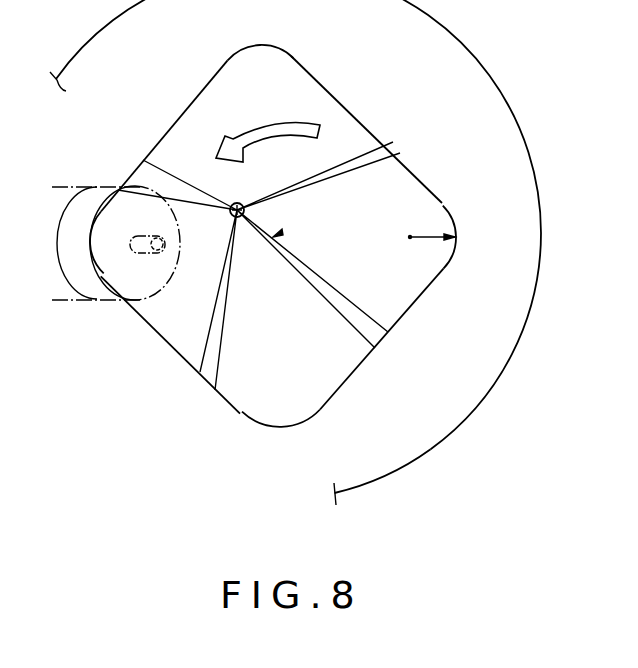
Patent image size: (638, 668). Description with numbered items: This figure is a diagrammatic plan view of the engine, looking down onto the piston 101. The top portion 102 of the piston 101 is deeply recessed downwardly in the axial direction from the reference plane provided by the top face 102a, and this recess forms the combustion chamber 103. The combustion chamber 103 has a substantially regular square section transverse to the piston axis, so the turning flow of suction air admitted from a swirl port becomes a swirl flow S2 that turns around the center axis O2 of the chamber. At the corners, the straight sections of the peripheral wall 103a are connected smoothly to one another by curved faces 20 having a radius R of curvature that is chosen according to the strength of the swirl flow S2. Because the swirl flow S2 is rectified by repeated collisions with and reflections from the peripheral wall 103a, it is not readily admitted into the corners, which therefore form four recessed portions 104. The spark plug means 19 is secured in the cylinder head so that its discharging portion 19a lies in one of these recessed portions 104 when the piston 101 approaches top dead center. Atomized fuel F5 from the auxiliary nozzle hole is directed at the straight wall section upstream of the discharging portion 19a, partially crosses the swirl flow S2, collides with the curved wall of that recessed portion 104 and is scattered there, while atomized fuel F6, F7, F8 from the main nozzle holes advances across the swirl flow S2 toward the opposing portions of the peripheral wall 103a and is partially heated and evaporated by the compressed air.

The spark plug means 19 is at (62, 292).
The discharging portion 19a is at (128, 273).
The curved face 20 is at (452, 227).
The piston 101 is at (511, 107).
The top portion of the piston 102 is at (497, 232).
The top face of the piston 102a is at (417, 355).
The combustion chamber 103 is at (400, 197).
The peripheral wall 103a is at (368, 128).
The recessed portion 104 is at (267, 56).
The radius of curvature R is at (421, 240).
The center axis O2 is at (279, 233).
The swirl flow S2 is at (313, 122).
The atomized fuel F5 is at (157, 175).
The atomized fuel F6 is at (205, 352).
The atomized fuel F7 is at (358, 325).
The atomized fuel F8 is at (378, 150).